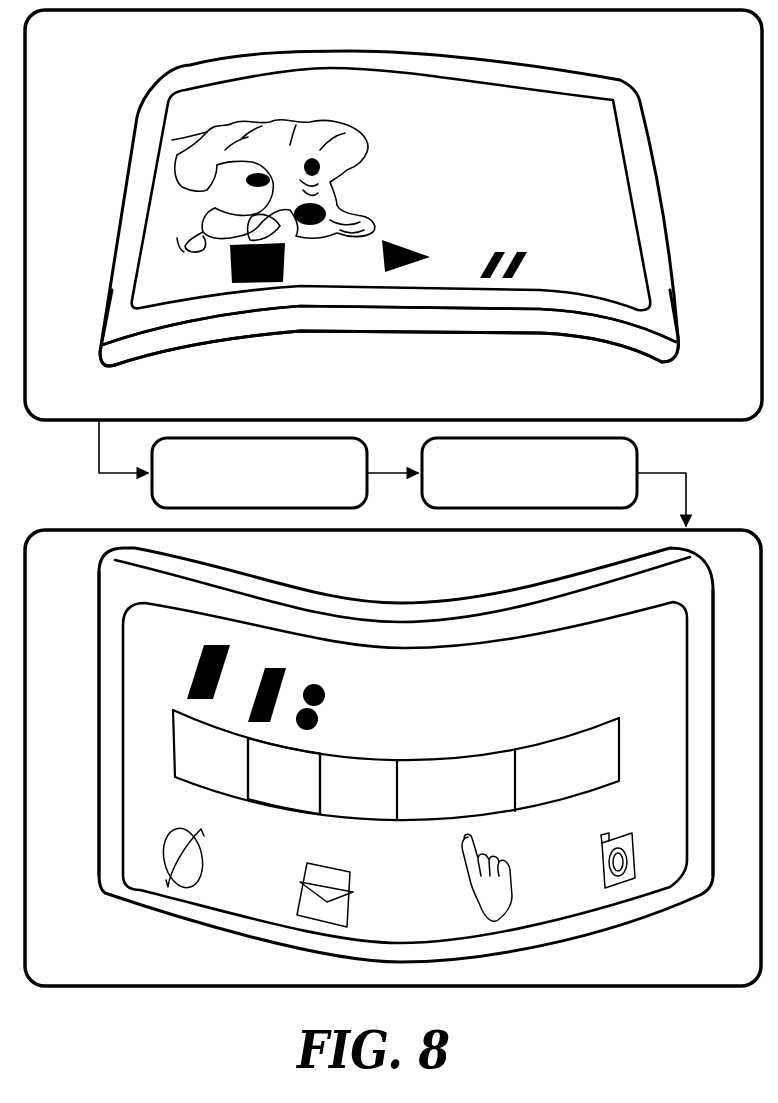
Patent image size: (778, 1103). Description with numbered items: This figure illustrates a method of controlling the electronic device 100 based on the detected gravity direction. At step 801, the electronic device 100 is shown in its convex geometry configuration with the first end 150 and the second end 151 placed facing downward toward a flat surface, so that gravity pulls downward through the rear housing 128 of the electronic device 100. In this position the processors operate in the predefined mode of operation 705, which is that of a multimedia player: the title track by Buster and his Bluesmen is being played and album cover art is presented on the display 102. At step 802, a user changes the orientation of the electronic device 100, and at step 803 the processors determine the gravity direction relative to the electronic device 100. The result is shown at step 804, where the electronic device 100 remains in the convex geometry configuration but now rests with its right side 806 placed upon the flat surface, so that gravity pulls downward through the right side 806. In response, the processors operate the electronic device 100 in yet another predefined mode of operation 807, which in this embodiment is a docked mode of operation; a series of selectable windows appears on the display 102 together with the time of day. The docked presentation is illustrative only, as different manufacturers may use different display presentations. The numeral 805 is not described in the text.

The electronic device 100 is at (108, 174).
The display 102 is at (608, 182).
The rear housing 128 is at (381, 332).
The first end 150 is at (90, 351).
The second end 151 is at (692, 351).
The predefined mode of operation 705 is at (183, 208).
The step 801 is at (26, 100).
The step 802 is at (152, 497).
The step 803 is at (637, 452).
The step 804 is at (68, 530).
The clock display region 805 is at (152, 670).
The right side 806 is at (281, 792).
The predefined mode of operation 807 is at (154, 729).